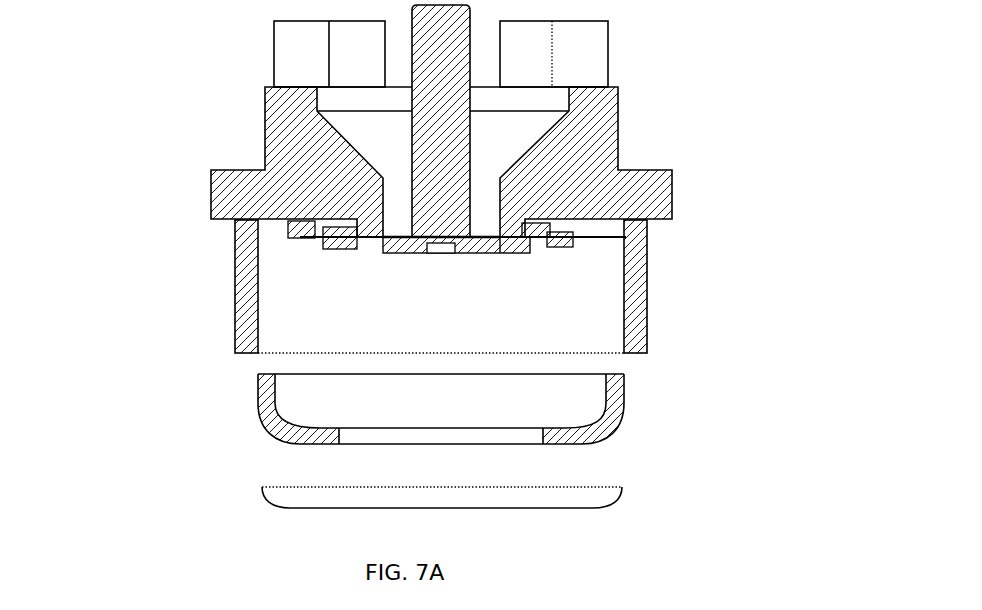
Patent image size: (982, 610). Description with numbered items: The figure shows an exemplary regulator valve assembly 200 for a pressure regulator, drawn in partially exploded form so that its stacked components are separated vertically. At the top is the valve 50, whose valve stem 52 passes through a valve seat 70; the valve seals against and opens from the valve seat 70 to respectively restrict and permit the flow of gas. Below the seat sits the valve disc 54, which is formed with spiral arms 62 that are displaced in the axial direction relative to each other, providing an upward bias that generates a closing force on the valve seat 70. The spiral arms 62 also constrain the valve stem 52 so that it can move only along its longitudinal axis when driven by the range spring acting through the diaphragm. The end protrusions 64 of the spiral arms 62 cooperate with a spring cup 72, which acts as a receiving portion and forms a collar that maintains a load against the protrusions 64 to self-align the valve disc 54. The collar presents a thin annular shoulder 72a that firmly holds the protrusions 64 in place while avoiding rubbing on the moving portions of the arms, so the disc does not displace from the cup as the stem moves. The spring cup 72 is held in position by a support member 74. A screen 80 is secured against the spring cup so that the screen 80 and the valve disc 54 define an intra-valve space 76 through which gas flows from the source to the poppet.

The regulator valve assembly 200 is at (213, 53).
The valve stem 52 is at (458, 58).
The valve seat 70 is at (305, 175).
The valve 50 is at (453, 222).
The valve disc 54 is at (498, 252).
The end protrusions 64 is at (350, 239).
The spiral arms 62 is at (503, 237).
The support member 74 is at (234, 288).
The intra-valve space 76 is at (540, 323).
The spring cup 72 is at (340, 407).
The annular shoulder 72a is at (258, 400).
The screen 80 is at (555, 508).